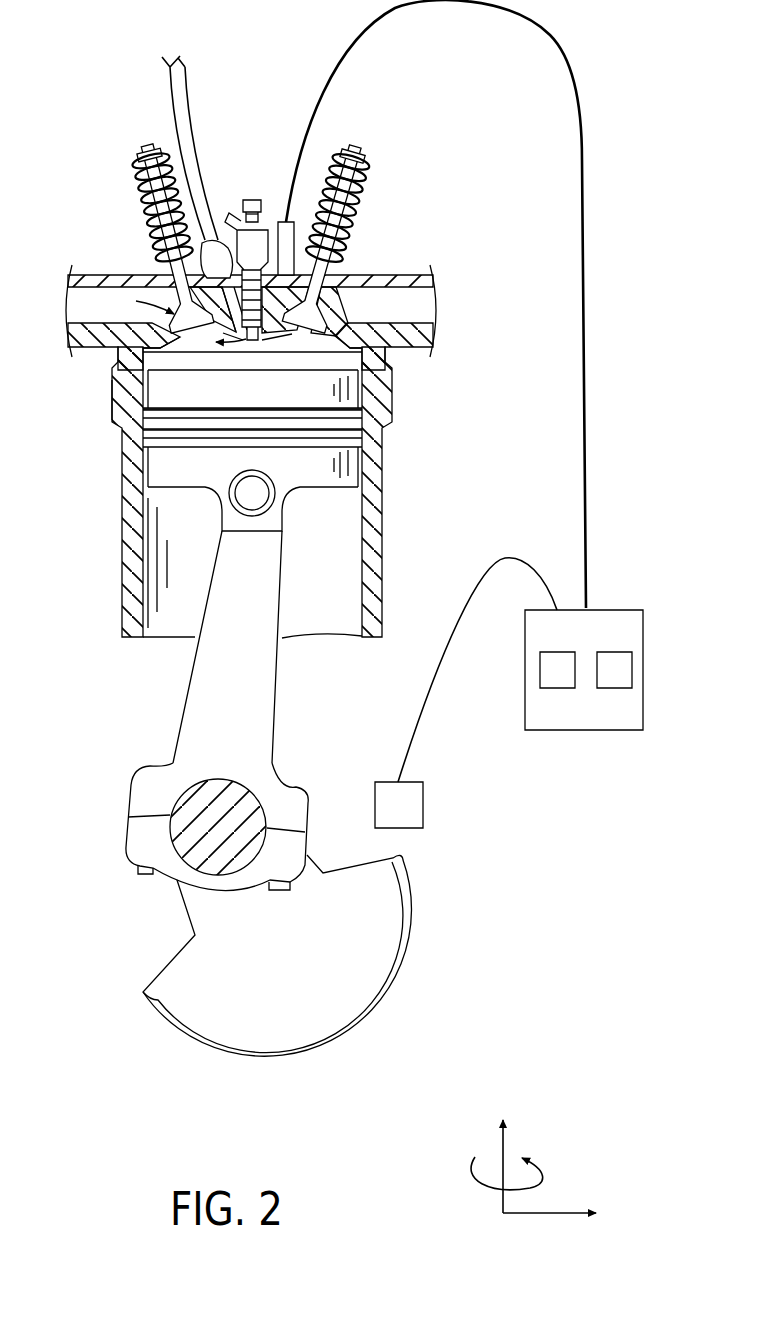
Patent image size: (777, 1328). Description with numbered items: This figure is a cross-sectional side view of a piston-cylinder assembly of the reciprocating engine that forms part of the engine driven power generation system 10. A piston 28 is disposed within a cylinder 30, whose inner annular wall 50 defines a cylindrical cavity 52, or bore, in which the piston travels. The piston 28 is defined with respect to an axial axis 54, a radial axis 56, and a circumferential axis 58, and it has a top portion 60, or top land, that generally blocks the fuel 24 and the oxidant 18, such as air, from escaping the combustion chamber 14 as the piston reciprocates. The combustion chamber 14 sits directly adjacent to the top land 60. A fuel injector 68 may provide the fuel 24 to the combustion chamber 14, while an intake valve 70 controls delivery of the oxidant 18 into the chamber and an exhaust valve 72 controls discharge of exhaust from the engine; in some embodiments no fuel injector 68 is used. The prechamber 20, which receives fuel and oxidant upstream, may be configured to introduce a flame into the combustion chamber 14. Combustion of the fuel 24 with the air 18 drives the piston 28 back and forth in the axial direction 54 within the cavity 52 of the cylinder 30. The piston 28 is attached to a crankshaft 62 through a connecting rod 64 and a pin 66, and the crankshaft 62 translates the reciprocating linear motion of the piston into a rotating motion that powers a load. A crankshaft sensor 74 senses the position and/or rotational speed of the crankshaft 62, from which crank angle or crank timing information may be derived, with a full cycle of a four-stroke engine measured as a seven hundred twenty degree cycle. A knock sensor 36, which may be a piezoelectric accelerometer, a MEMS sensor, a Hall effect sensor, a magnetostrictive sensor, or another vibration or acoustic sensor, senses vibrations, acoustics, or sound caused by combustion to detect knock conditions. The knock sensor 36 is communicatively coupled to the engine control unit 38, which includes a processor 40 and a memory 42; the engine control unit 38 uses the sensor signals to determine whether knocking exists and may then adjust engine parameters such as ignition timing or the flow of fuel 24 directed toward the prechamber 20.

The engine driven power generation system 10 is at (482, 175).
The combustion chamber 14 is at (296, 340).
The oxidant 18 is at (158, 296).
The prechamber 20 is at (203, 205).
The fuel 24 is at (252, 196).
The piston 28 is at (328, 477).
The cylinder 30 is at (121, 524).
The knock sensor 36 is at (296, 266).
The engine control unit 38 is at (643, 608).
The processor 40 is at (555, 688).
The memory 42 is at (120, 396).
The inner annular wall 50 is at (150, 570).
The cylindrical cavity 52 is at (193, 629).
The axial axis 54 is at (500, 1147).
The radial axis 56 is at (545, 1214).
The circumferential axis 58 is at (535, 1184).
The top portion 60 is at (313, 399).
The crankshaft 62 is at (188, 978).
The connecting rod 64 is at (256, 746).
The pin 66 is at (258, 497).
The fuel injector 68 is at (256, 212).
The intake valve 70 is at (147, 157).
The exhaust valve 72 is at (356, 158).
The crankshaft sensor 74 is at (423, 803).